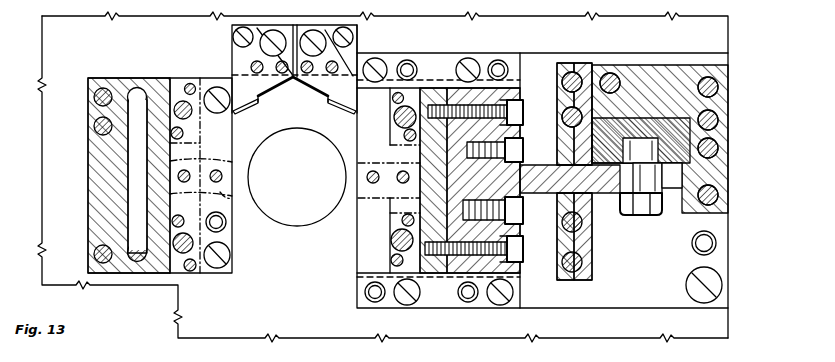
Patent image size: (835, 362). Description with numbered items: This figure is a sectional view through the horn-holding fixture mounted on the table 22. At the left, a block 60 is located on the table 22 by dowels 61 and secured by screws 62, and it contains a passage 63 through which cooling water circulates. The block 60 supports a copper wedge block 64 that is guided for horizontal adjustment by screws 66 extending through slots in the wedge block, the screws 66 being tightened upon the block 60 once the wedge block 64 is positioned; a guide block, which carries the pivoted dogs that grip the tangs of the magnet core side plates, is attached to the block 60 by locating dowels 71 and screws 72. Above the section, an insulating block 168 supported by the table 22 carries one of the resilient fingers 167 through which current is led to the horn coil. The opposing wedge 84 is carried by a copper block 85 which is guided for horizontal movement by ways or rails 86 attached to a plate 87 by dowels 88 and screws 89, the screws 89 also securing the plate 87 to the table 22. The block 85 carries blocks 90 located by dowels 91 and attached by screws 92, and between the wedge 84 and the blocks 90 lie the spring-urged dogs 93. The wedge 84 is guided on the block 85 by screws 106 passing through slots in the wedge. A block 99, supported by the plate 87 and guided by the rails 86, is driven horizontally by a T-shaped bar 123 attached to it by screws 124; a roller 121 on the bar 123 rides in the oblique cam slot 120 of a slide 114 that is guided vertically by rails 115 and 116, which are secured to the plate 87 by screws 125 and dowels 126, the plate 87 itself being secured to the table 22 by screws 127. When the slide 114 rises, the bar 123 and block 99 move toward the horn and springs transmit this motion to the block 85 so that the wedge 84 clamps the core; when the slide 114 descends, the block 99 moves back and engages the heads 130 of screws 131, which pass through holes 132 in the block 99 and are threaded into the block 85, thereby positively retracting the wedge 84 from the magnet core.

The table 22 is at (42, 156).
The block 60 is at (93, 78).
The dowels 61 is at (94, 98).
The screws 62 is at (94, 126).
The passage 63 is at (137, 88).
The copper wedge block 64 is at (245, 208).
The screws 66 is at (222, 177).
The locating dowels 71 is at (191, 83).
The screws 72 is at (182, 101).
The wedge 84 is at (368, 194).
The copper block 85 is at (438, 96).
The ways or rails 86 is at (438, 53).
The plate 87 is at (646, 53).
The dowels 88 is at (408, 59).
The screws 89 is at (387, 56).
The blocks 90 is at (390, 250).
The dowels 91 is at (392, 98).
The screws 92 is at (394, 117).
The dogs 93 is at (390, 153).
The block 99 is at (512, 94).
The screws 106 is at (368, 164).
The slide 114 is at (690, 118).
The way or rail 115 is at (678, 64).
The way or rail 116 is at (562, 66).
The oblique cam slot 120 is at (672, 170).
The roller 121 is at (628, 180).
The bar 123 is at (538, 165).
The screws 124 is at (523, 206).
The screws 125 is at (611, 73).
The dowels 126 is at (574, 72).
The screws 127 is at (723, 284).
The heads 130 is at (523, 112).
The screws 131 is at (520, 98).
The holes 132 is at (470, 180).
The resilient fingers 167 is at (328, 101).
The insulating block 168 is at (311, 25).